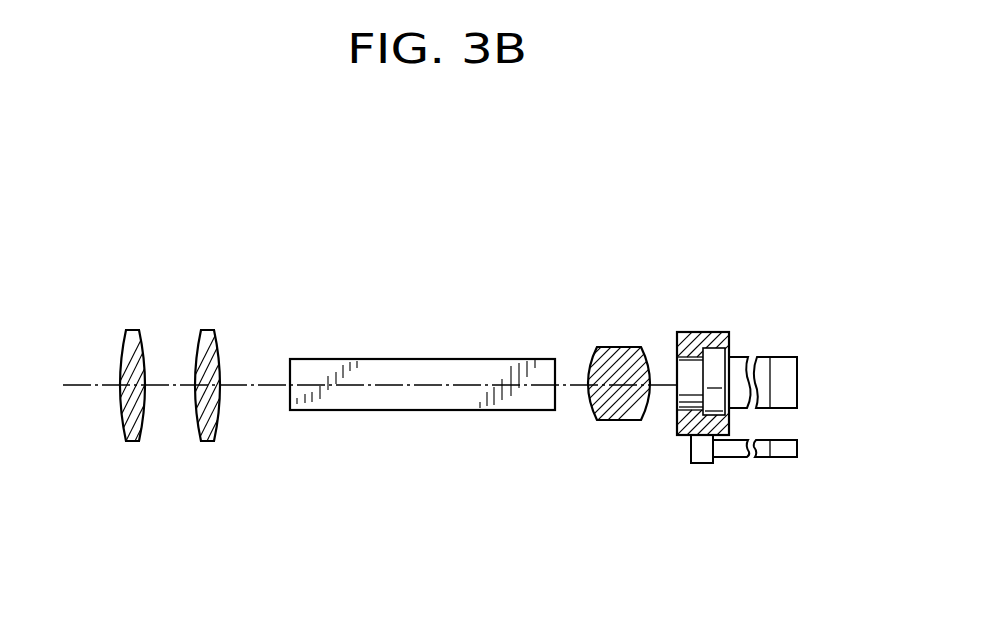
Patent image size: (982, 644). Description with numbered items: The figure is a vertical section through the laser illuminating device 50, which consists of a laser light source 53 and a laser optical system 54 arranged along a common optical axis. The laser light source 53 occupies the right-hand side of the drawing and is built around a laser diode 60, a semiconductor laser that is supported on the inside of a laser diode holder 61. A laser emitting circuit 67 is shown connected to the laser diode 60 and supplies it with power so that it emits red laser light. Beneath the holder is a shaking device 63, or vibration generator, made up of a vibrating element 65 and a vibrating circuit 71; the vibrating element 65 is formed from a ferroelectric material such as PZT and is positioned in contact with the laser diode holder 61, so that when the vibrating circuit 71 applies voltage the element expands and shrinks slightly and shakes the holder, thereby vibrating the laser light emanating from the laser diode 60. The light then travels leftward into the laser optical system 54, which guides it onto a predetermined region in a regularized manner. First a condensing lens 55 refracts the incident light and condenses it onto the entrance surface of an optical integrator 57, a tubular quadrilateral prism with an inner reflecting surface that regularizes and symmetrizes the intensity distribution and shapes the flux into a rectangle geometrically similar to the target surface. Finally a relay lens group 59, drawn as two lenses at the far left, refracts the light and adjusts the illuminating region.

The laser illuminating device 50 is at (566, 176).
The laser light source 53 is at (696, 300).
The laser optical system 54 is at (627, 248).
The condensing lens 55 is at (612, 346).
The optical integrator 57 is at (434, 358).
The relay lens group 59 is at (222, 315).
The laser diode 60 is at (712, 352).
The laser diode holder 61 is at (680, 331).
The shaking device 63 is at (686, 477).
The vibrating element 65 is at (703, 463).
The laser emitting circuit 67 is at (783, 362).
The vibrating circuit 71 is at (785, 457).